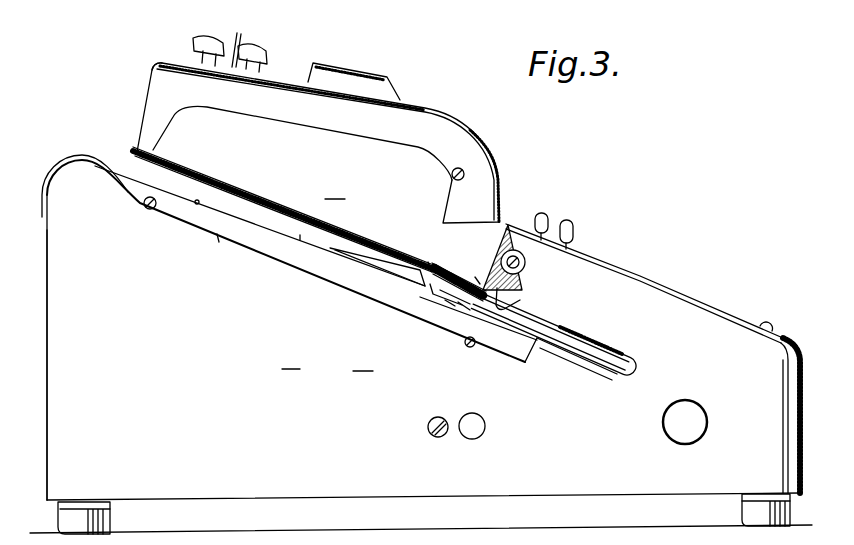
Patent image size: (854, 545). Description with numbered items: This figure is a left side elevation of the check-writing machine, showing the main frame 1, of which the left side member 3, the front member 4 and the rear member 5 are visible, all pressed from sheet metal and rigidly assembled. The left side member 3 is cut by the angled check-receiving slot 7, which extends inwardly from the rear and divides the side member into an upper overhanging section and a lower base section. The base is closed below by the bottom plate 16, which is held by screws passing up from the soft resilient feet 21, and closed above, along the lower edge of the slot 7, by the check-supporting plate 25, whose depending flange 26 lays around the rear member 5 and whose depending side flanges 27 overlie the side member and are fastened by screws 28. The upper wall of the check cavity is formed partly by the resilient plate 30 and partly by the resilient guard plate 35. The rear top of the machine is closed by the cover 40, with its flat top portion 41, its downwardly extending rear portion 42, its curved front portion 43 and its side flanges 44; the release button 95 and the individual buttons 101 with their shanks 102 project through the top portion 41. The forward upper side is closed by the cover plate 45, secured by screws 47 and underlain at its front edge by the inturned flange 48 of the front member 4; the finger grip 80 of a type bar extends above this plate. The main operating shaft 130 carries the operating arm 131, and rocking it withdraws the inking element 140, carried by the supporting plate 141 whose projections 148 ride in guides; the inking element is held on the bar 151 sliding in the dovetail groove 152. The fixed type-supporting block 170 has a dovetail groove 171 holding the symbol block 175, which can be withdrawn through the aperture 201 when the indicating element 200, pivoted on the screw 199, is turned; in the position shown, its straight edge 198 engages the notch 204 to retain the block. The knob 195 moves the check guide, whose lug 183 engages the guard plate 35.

The main frame 1 is at (48, 498).
The left side member 3 is at (332, 330).
The front member 4 is at (800, 420).
The rear member 5 is at (47, 346).
The check-receiving slot 7 is at (137, 165).
The bottom plate 16 is at (412, 500).
The feet 21 is at (112, 520).
The check-supporting plate 25 is at (197, 204).
The depending flange 26 is at (52, 172).
The depending flanges 27 is at (218, 242).
The screws 28 is at (148, 210).
The resilient plate 30 is at (300, 236).
The resilient guard plate 35 is at (598, 358).
The cover 40 is at (435, 112).
The top portion 41 is at (273, 78).
The rear portion 42 is at (148, 85).
The front portion 43 is at (490, 165).
The side flanges 44 is at (348, 133).
The cover plate 45 is at (454, 178).
The screws 47 is at (770, 324).
The inturned flange 48 is at (534, 228).
The finger grip 80 is at (568, 222).
The release button 95 is at (365, 80).
The individual buttons 101 is at (200, 37).
The shanks 102 is at (234, 43).
The main operating shaft 130 is at (486, 425).
The operating arm 131 is at (365, 267).
The inking element 140 is at (448, 307).
The supporting plate 141 is at (563, 328).
The projections 148 is at (502, 300).
The bar 151 is at (445, 298).
The dovetail groove 152 is at (432, 287).
The type-supporting block 170 is at (438, 268).
The dovetail groove 171 is at (450, 272).
The symbol block 175 is at (465, 307).
The lug 183 is at (594, 336).
The operating knob 195 is at (702, 412).
The straight edge 198 is at (497, 237).
The screw 199 is at (522, 268).
The indicating element 200 is at (521, 253).
The aperture 201 is at (425, 265).
The notch 204 is at (475, 277).